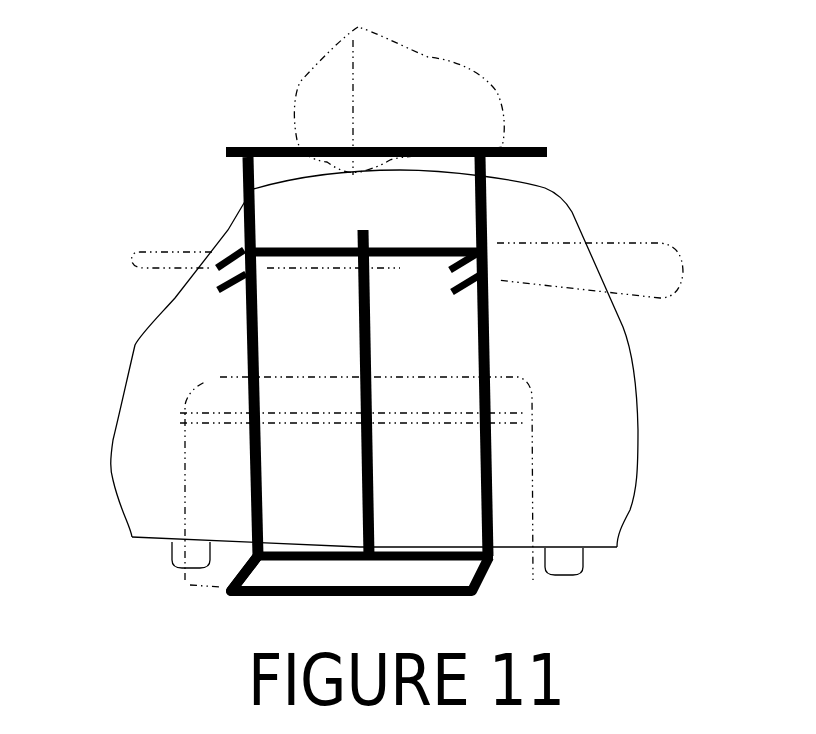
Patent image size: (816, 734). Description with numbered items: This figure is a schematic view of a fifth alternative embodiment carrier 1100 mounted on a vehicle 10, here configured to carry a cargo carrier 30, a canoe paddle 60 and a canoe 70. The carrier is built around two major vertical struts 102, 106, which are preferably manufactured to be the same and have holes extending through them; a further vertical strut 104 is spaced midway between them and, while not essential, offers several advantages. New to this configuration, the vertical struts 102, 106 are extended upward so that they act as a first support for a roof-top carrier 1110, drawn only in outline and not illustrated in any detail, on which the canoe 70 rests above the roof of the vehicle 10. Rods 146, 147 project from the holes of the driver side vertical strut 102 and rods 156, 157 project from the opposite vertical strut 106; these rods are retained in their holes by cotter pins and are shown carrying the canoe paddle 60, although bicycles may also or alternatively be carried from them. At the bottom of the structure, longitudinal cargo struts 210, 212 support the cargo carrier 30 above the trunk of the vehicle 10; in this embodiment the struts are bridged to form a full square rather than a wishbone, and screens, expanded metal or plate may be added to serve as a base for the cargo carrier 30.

The vehicle 10 is at (228, 228).
The canoe 70 is at (450, 64).
The canoe paddle 60 is at (650, 243).
The cargo carrier 30 is at (523, 420).
The fifth alternative embodiment carrier 1100 is at (399, 332).
The roof-top carrier 1110 is at (545, 152).
The vertical strut 102 is at (250, 398).
The vertical strut 106 is at (490, 362).
The vertical strut 104 is at (377, 510).
The longitudinal cargo strut 210 is at (483, 587).
The longitudinal cargo strut 212 is at (247, 573).
The rod 147 is at (217, 265).
The rod 146 is at (218, 289).
The rod 157 is at (490, 267).
The rod 156 is at (490, 293).